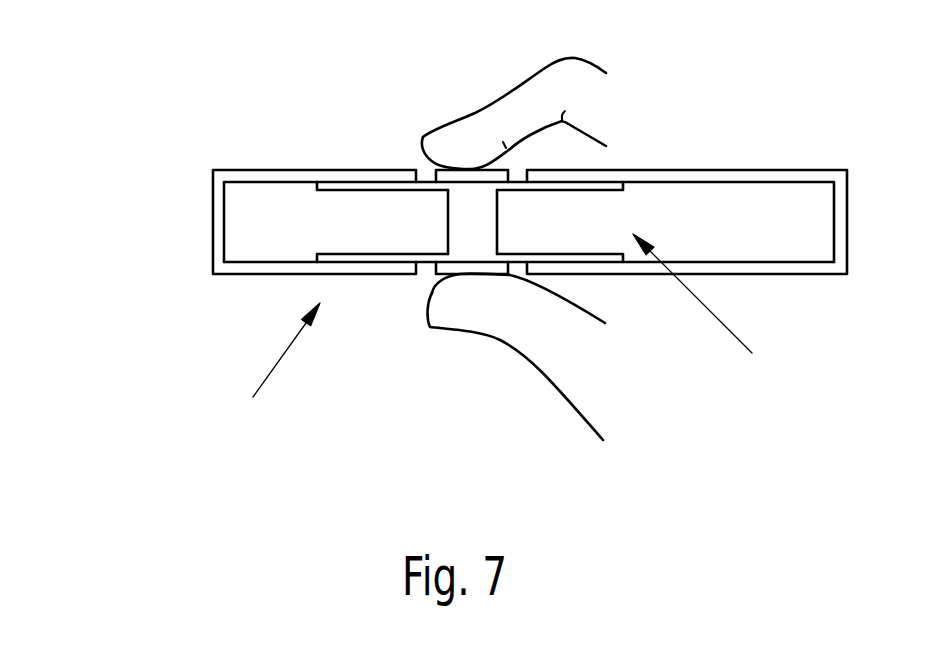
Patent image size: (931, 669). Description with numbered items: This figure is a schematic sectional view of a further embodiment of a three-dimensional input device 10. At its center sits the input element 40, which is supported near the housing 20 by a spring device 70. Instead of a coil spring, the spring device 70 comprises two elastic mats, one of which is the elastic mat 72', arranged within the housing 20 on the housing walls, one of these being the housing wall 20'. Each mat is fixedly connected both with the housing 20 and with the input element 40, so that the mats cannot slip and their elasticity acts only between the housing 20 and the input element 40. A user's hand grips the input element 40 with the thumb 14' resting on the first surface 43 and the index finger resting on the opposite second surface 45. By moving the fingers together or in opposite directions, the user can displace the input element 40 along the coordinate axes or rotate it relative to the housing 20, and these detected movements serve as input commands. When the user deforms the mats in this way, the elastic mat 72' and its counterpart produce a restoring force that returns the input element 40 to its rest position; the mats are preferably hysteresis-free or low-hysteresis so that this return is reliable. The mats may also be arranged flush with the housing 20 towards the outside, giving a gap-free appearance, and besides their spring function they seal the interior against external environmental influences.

The 3D input device 10 is at (268, 374).
The thumb 14' is at (502, 365).
The housing 20 is at (504, 157).
The housing wall 20' is at (529, 143).
The input element 40 is at (483, 226).
The first surface 43 is at (455, 180).
The second surface 45 is at (445, 268).
The spring device 70 is at (711, 307).
The elastic mat 72' is at (470, 115).